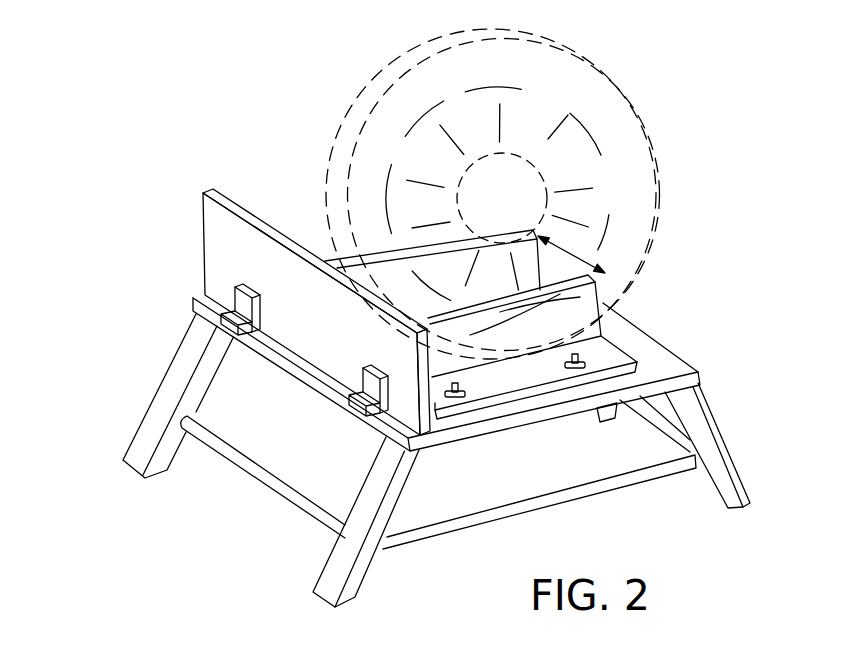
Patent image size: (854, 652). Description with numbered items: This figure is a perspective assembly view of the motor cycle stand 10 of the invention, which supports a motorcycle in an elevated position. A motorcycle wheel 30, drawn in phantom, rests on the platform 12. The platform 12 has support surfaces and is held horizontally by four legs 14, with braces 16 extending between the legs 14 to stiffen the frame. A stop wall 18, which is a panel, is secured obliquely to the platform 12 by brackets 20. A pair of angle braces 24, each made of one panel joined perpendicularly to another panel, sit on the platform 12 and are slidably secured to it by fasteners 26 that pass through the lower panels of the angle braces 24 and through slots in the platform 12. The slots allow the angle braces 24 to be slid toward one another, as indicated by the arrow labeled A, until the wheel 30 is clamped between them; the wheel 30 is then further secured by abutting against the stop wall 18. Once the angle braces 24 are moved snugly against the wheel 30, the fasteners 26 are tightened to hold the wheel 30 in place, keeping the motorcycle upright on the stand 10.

The motor cycle stand 10 is at (100, 322).
The platform 12 is at (657, 355).
The legs 14 is at (143, 418).
The braces 16 is at (292, 375).
The stop wall 18 is at (203, 245).
The brackets 20 is at (370, 367).
The angle braces 24 is at (493, 258).
The fasteners 26 is at (457, 387).
The motorcycle wheel 30 is at (606, 76).